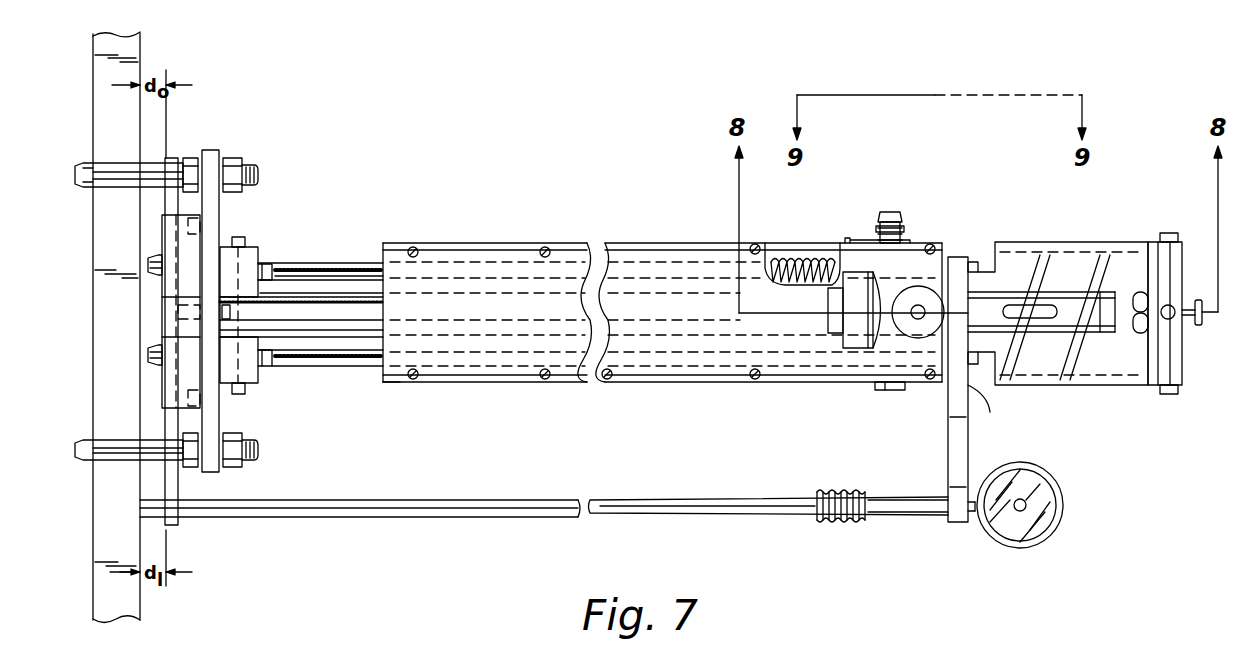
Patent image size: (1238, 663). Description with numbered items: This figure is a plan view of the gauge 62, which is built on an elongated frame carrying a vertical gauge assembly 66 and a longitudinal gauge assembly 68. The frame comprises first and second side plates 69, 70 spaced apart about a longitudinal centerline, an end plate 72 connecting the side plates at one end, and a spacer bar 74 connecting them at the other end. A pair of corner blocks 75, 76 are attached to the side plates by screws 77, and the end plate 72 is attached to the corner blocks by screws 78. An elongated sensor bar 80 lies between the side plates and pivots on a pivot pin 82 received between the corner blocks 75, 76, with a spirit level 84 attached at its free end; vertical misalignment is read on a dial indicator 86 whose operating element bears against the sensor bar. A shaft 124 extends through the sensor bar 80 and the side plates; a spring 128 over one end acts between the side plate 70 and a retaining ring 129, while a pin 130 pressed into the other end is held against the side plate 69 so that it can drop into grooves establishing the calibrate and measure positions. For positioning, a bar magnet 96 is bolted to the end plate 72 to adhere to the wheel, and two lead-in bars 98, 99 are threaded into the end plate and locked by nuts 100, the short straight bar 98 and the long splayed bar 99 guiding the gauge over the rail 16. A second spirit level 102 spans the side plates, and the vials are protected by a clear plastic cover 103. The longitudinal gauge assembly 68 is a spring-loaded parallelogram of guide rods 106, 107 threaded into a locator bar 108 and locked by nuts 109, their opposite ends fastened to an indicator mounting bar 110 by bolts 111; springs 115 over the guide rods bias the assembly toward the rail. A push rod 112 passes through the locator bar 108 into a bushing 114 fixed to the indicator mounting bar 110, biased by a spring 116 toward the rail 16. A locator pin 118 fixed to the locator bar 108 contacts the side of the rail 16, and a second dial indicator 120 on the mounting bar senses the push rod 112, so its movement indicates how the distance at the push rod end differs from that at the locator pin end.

The rail 16 is at (142, 600).
The gauge 62 is at (530, 247).
The vertical gauge assembly 66 is at (378, 292).
The longitudinal gauge assembly 68 is at (450, 515).
The first side plate 69 is at (380, 382).
The second side plate 70 is at (326, 263).
The end plate 72 is at (212, 152).
The spacer bar 74 is at (1178, 386).
The corner block 75 is at (266, 276).
The corner block 76 is at (250, 394).
The screws 77 is at (240, 386).
The screws 78 is at (226, 318).
The sensor bar 80 is at (355, 300).
The pivot pin 82 is at (270, 340).
The spirit level 84 is at (1060, 294).
The dial indicator 86 is at (858, 348).
The bar magnet 96 is at (162, 396).
The lead-in bar 98 is at (118, 176).
The lead-in bar 99 is at (85, 462).
The nuts 100 is at (190, 158).
The second spirit level 102 is at (1140, 335).
The clear plastic cover 103 is at (1142, 334).
The guide rod 106 is at (352, 274).
The guide rod 107 is at (360, 366).
The locator bar 108 is at (165, 490).
The nuts 109 is at (150, 266).
The indicator mounting bar 110 is at (970, 460).
The bolts 111 is at (985, 262).
The push rod 112 is at (340, 518).
The bushing 114 is at (910, 515).
The springs 115 is at (815, 258).
The spring 116 is at (838, 522).
The locator pin 118 is at (160, 158).
The second dial indicator 120 is at (1055, 522).
The shaft 124 is at (890, 212).
The spring 128 is at (906, 240).
The retaining ring 129 is at (905, 226).
The pin 130 is at (905, 390).